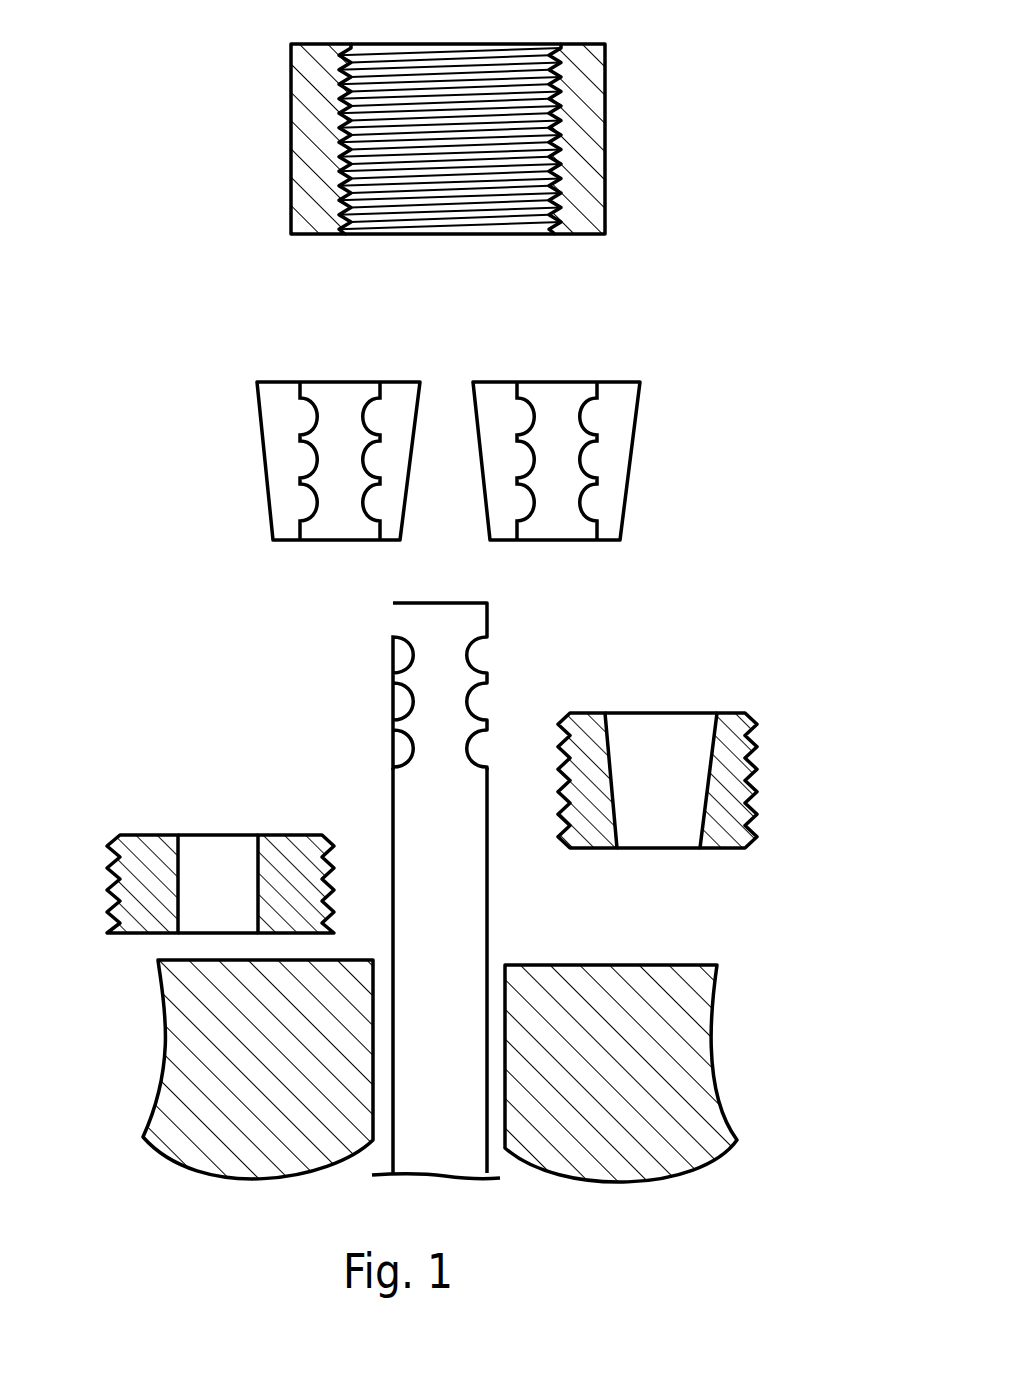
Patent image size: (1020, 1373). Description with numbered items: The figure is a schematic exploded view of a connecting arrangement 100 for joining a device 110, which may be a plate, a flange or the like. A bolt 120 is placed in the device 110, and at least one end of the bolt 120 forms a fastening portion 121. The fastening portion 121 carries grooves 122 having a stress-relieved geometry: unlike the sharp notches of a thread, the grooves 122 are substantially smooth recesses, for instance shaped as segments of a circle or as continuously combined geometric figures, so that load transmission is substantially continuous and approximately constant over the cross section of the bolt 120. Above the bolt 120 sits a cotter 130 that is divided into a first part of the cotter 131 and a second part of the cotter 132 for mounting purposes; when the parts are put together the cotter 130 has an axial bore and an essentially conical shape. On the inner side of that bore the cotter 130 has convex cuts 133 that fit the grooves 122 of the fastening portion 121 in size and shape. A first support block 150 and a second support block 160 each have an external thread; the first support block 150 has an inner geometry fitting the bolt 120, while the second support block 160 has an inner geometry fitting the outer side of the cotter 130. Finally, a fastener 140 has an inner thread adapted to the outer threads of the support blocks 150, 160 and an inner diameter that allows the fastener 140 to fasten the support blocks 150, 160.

The connecting arrangement 100 is at (207, 72).
The device 110 is at (224, 1115).
The bolt 120 is at (452, 1155).
The fastening portion 121 is at (521, 696).
The grooves 122 is at (403, 633).
The cotter 130 is at (559, 377).
The first part of the cotter 131 is at (580, 466).
The second part of the cotter 132 is at (312, 446).
The convex cuts 133 is at (600, 410).
The fastener 140 is at (605, 152).
The first support block 150 is at (157, 885).
The second support block 160 is at (633, 825).